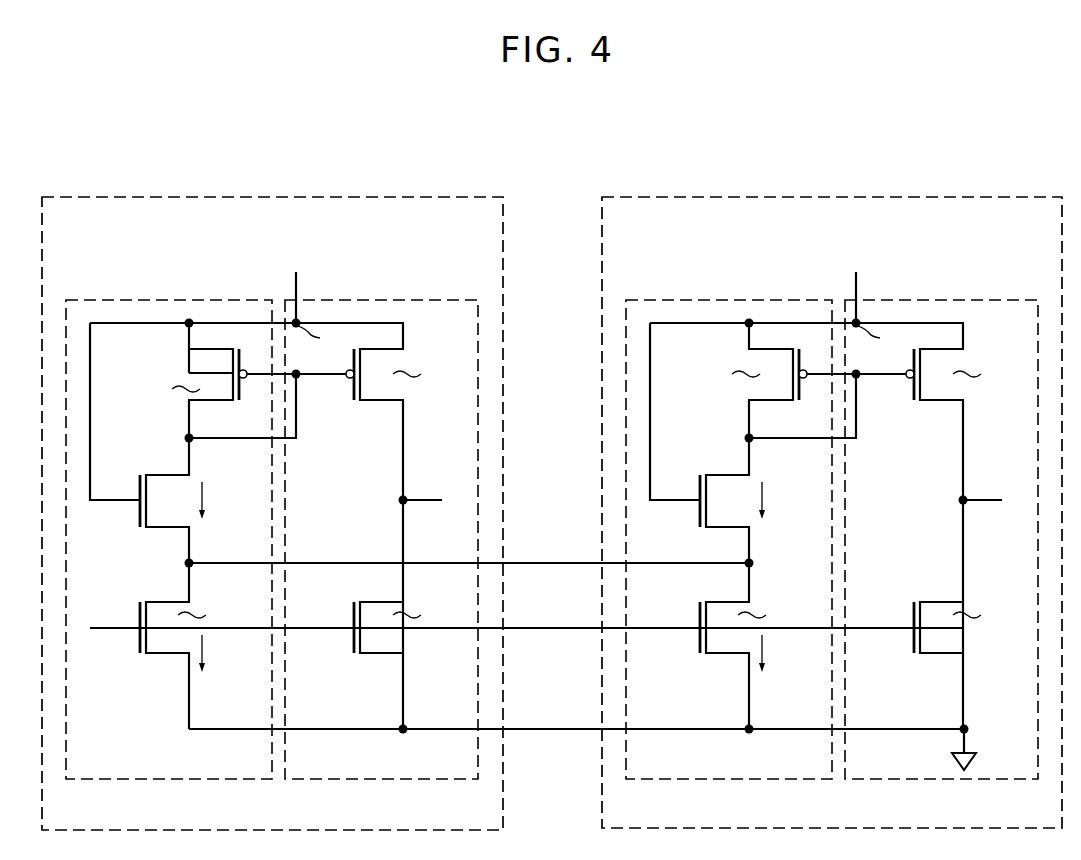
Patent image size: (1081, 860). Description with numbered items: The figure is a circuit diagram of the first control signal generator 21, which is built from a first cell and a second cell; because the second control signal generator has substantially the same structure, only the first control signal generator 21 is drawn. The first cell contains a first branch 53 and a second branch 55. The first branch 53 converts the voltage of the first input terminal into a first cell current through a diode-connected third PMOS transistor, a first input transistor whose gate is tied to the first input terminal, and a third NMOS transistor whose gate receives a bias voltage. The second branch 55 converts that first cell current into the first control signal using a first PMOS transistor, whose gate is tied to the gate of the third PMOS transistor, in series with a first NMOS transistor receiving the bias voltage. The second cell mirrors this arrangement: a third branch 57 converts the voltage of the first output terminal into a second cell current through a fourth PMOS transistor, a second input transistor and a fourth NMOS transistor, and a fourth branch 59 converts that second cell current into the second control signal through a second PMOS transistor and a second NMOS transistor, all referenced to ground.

The first control signal generator 21 is at (1000, 170).
The first branch 53 is at (168, 780).
The second branch 55 is at (380, 780).
The third branch 57 is at (743, 559).
The fourth branch 59 is at (935, 534).